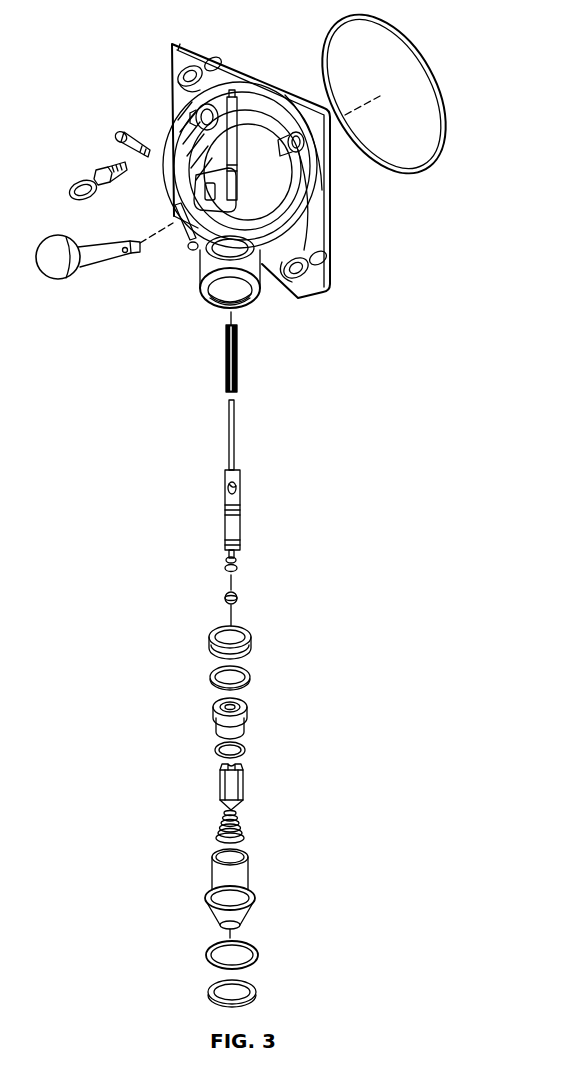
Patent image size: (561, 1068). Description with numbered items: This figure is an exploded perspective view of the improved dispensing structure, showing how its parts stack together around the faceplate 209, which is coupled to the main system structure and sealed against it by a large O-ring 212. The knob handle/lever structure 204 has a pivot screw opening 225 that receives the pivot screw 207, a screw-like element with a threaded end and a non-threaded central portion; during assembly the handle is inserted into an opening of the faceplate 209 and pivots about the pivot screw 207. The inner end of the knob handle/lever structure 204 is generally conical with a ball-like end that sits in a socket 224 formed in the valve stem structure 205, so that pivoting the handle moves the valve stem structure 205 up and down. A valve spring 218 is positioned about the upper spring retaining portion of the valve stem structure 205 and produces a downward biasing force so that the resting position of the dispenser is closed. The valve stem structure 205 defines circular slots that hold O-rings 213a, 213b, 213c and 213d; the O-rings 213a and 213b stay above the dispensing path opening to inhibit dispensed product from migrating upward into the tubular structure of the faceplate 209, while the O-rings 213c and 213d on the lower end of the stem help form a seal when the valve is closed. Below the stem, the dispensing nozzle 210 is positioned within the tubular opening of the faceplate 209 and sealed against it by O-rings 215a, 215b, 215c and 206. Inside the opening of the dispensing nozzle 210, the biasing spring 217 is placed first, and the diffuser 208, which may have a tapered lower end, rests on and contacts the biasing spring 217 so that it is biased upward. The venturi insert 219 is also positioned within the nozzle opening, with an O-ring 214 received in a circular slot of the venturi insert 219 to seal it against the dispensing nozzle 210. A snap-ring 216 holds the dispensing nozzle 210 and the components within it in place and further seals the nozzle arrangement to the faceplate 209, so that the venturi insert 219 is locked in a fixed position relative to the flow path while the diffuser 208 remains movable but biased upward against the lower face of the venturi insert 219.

The knob handle/lever structure 204 is at (62, 278).
The valve stem structure 205 is at (219, 506).
The O-ring 206 is at (205, 958).
The pivot screw 207 is at (120, 133).
The diffuser 208 is at (247, 782).
The faceplate 209 is at (318, 228).
The dispensing nozzle 210 is at (255, 905).
The large O-ring 212 is at (412, 52).
The O-ring 213a is at (225, 560).
The O-ring 213b is at (225, 569).
The O-ring 213c is at (238, 596).
The O-ring 213d is at (238, 602).
The O-ring 214 is at (216, 752).
The O-ring 215a is at (218, 628).
The O-ring 215b is at (208, 645).
The O-ring 215c is at (210, 684).
The snap-ring 216 is at (258, 998).
The biasing spring 217 is at (214, 830).
The valve spring 218 is at (238, 362).
The venturi insert 219 is at (247, 724).
The socket 224 is at (219, 488).
The pivot screw opening 225 is at (130, 268).